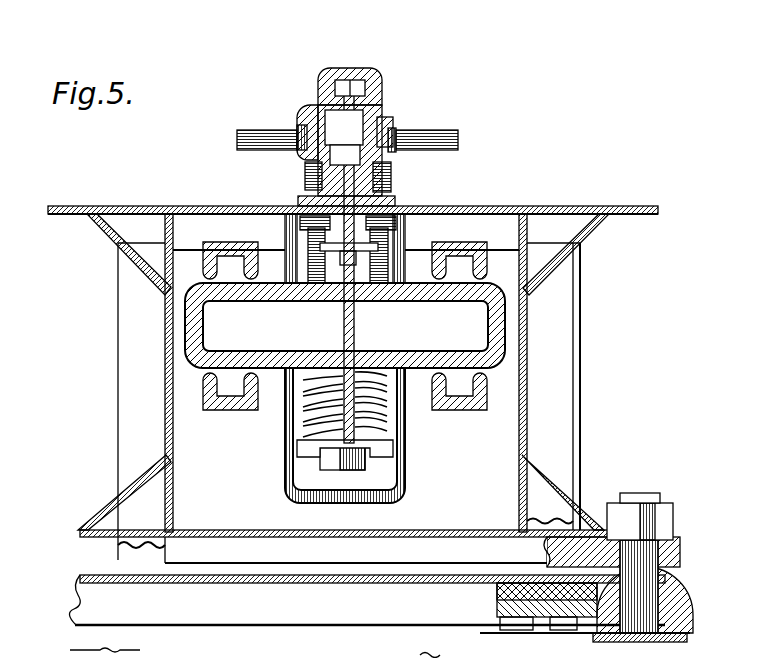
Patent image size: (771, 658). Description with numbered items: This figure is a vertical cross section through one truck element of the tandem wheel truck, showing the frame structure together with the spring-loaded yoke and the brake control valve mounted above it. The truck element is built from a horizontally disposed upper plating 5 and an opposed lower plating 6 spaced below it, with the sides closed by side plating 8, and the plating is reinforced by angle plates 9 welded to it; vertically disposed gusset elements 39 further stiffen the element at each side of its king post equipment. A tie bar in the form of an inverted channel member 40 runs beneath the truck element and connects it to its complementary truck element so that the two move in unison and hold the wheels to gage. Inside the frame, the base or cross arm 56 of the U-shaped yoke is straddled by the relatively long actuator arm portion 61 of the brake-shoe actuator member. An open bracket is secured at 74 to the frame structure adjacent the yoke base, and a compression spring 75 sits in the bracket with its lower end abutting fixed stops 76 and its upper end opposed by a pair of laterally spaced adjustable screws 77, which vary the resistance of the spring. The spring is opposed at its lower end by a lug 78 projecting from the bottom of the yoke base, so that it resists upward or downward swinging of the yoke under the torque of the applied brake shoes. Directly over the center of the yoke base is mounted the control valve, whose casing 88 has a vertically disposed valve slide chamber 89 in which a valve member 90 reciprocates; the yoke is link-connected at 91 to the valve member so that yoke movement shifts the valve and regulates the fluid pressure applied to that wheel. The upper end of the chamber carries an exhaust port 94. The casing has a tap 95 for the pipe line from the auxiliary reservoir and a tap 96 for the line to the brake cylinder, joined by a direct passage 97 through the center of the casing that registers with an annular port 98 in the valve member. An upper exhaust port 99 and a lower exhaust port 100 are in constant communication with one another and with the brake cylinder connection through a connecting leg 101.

The upper plating 5 is at (577, 196).
The lower plating 6 is at (353, 530).
The side plating 8 is at (165, 307).
The angle plates 9 is at (112, 236).
The gusset elements 39 is at (130, 386).
The inverted channel member 40 is at (367, 600).
The yoke base 56 is at (192, 328).
The actuator arm portion 61 is at (229, 240).
The bracket securing point 74 is at (400, 212).
The compression spring 75 is at (388, 410).
The fixed stops 76 is at (300, 450).
The screws 77 is at (306, 178).
The lug 78 is at (330, 462).
The casing 88 is at (368, 74).
The valve slide chamber 89 is at (348, 90).
The valve member 90 is at (376, 112).
The link connection 91 is at (391, 195).
The exhaust port 94 is at (344, 127).
The tap 95 is at (447, 140).
The tap 96 is at (262, 132).
The direct passage 97 is at (393, 134).
The annular port 98 is at (364, 130).
The upper exhaust port 99 is at (316, 118).
The lower exhaust port 100 is at (345, 155).
The connecting leg 101 is at (298, 128).